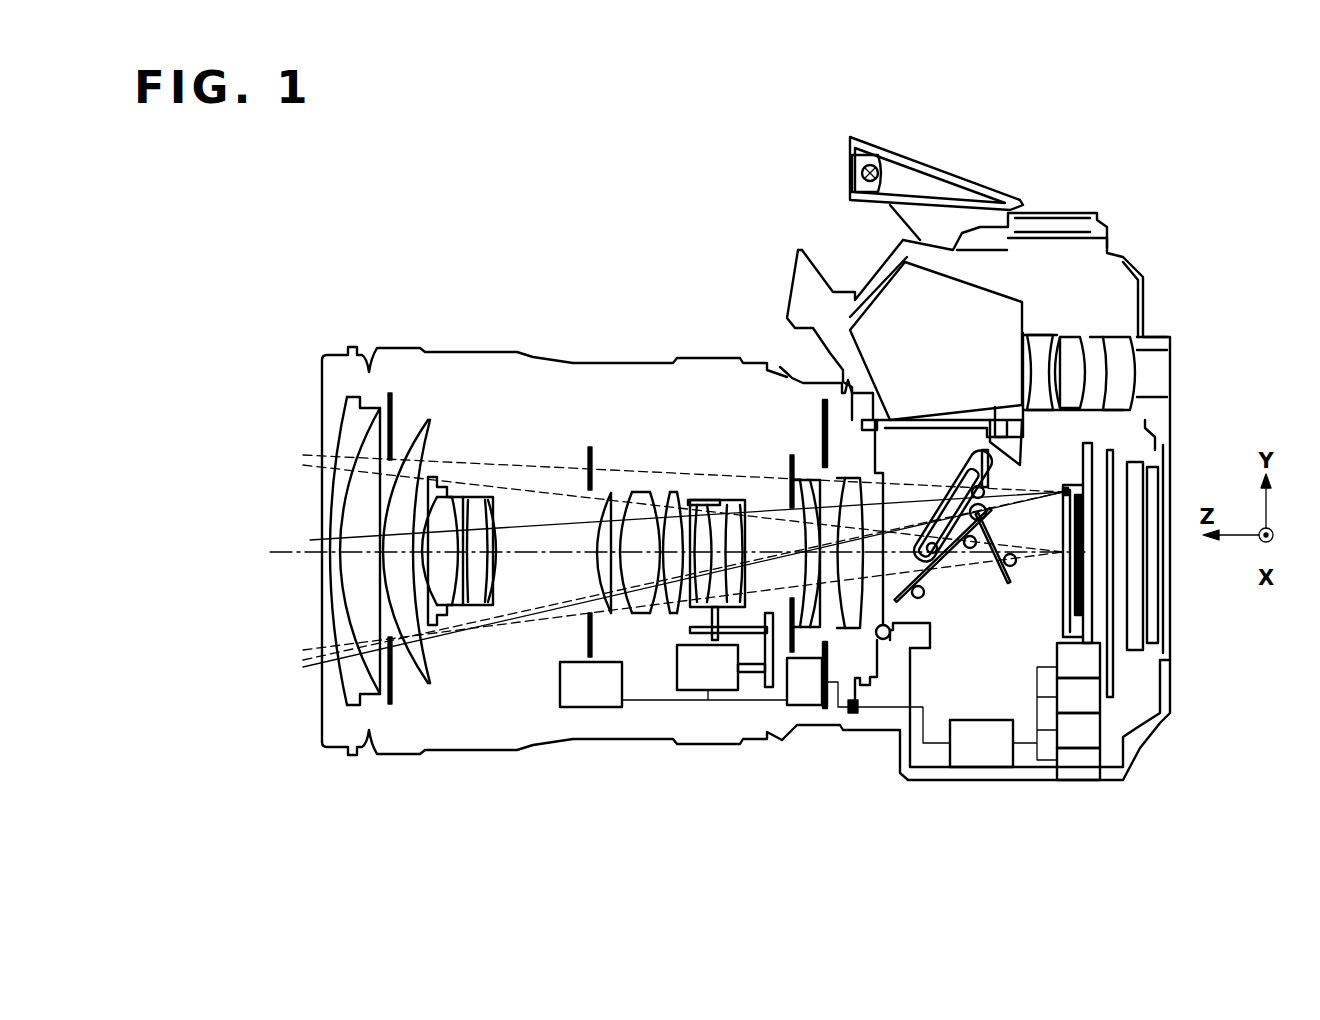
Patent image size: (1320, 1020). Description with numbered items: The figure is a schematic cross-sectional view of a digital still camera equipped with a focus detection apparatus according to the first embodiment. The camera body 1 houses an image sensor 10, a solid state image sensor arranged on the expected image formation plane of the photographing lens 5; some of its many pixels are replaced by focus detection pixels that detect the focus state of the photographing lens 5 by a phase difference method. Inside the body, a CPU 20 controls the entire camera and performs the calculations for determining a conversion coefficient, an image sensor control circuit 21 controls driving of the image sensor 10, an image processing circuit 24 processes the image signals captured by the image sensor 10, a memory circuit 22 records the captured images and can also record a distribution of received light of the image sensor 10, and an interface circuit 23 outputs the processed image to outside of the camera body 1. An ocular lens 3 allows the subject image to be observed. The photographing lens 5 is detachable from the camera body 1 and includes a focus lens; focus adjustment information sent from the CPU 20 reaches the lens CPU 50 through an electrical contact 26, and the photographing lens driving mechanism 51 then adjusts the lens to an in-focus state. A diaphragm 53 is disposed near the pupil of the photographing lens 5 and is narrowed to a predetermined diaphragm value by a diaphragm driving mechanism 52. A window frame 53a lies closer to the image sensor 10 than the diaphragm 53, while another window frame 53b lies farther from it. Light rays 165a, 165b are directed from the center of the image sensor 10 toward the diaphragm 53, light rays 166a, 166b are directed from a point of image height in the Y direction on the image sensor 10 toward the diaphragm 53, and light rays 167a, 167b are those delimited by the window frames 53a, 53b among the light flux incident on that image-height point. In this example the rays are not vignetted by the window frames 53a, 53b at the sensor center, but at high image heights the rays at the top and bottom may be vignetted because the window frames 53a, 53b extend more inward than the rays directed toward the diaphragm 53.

The camera body 1 is at (1058, 192).
The ocular lens 3 is at (1095, 325).
The photographing lens 5 is at (514, 330).
The image sensor 10 is at (1083, 580).
The CPU 20 is at (981, 743).
The image sensor control circuit 21 is at (1078, 695).
The memory circuit 22 is at (1078, 730).
The interface circuit 23 is at (1078, 764).
The image processing circuit 24 is at (1078, 660).
The electrical contact 26 is at (842, 723).
The lens CPU 50 is at (804, 681).
The photographing lens driving mechanism 51 is at (707, 667).
The diaphragm driving mechanism 52 is at (591, 684).
The diaphragm 53 is at (590, 445).
The window frame 53a is at (793, 453).
The window frame 53b is at (393, 390).
The light ray 165a is at (303, 460).
The light ray 165b is at (303, 652).
The light ray 166a is at (727, 497).
The light ray 166b is at (770, 580).
The light ray 167a is at (360, 537).
The light ray 167b is at (360, 665).